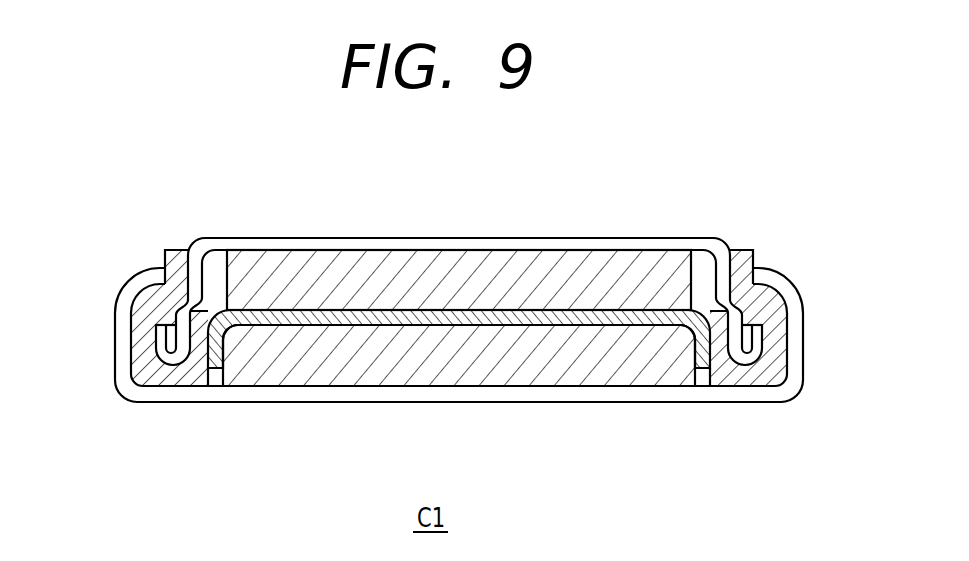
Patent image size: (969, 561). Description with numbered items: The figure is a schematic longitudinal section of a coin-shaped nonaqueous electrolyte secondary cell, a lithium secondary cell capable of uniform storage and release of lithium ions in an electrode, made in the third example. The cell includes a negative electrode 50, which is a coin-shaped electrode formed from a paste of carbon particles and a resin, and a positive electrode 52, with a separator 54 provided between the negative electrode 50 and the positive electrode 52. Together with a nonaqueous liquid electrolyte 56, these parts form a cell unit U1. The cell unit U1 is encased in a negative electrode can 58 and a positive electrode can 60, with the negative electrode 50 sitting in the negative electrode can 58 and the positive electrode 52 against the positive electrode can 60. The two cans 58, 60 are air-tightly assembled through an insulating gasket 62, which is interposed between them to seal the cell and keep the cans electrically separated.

The negative electrode 50 is at (347, 363).
The positive electrode 52 is at (455, 253).
The separator 54 is at (602, 322).
The nonaqueous liquid electrolyte 56 is at (200, 327).
The negative electrode can 58 is at (487, 397).
The positive electrode can 60 is at (613, 245).
The insulating gasket 62 is at (178, 253).
The cell unit U1 is at (660, 262).